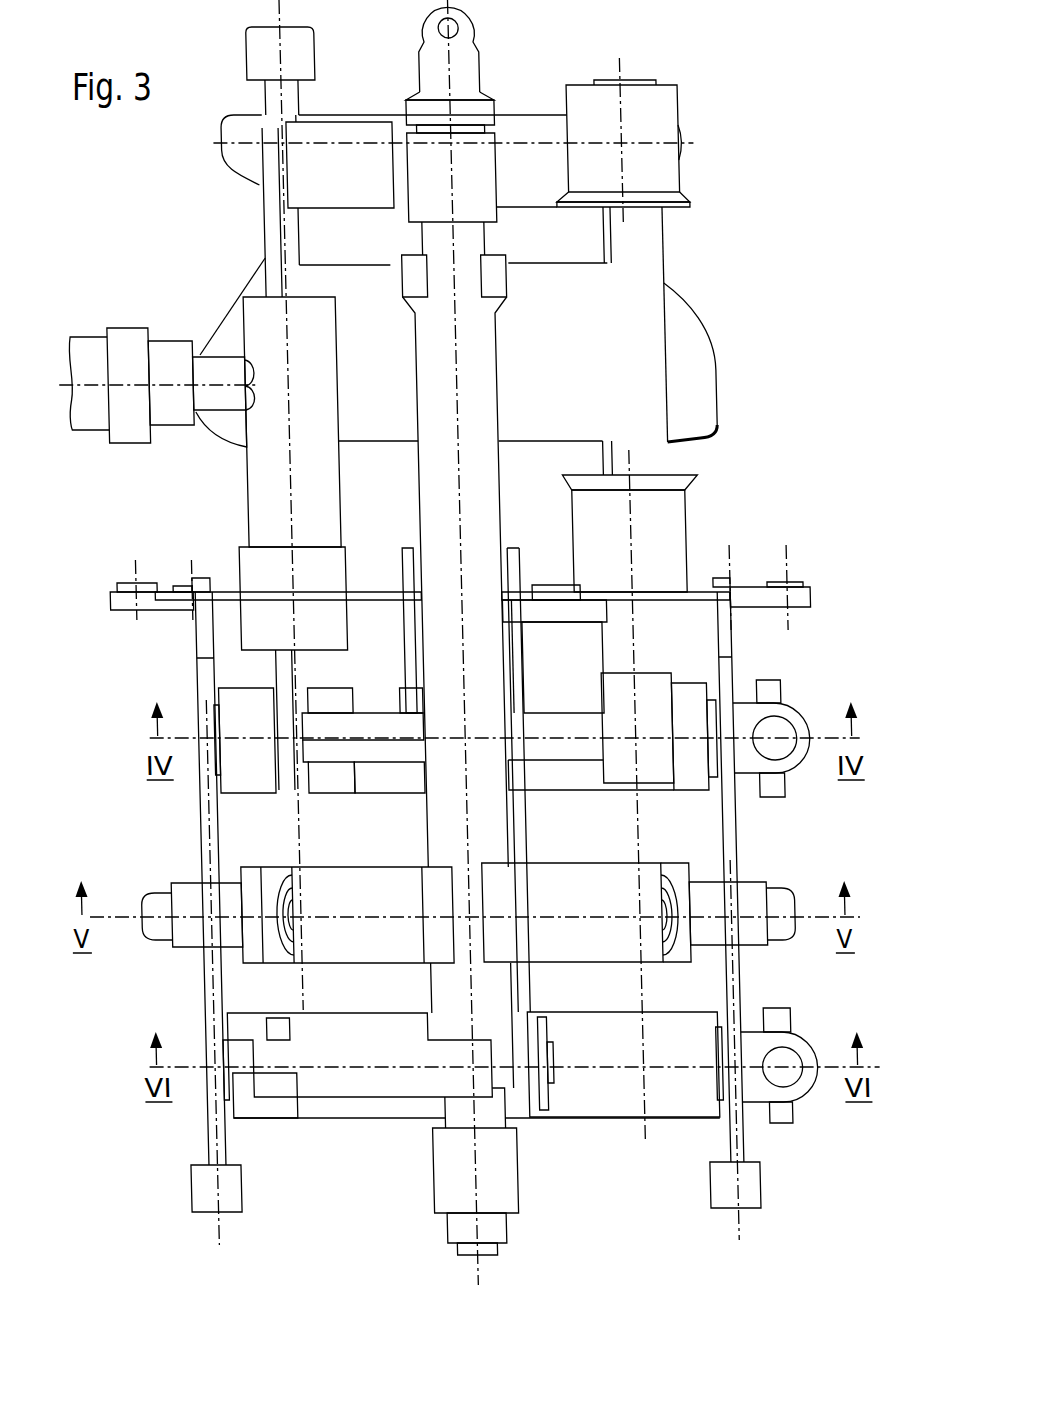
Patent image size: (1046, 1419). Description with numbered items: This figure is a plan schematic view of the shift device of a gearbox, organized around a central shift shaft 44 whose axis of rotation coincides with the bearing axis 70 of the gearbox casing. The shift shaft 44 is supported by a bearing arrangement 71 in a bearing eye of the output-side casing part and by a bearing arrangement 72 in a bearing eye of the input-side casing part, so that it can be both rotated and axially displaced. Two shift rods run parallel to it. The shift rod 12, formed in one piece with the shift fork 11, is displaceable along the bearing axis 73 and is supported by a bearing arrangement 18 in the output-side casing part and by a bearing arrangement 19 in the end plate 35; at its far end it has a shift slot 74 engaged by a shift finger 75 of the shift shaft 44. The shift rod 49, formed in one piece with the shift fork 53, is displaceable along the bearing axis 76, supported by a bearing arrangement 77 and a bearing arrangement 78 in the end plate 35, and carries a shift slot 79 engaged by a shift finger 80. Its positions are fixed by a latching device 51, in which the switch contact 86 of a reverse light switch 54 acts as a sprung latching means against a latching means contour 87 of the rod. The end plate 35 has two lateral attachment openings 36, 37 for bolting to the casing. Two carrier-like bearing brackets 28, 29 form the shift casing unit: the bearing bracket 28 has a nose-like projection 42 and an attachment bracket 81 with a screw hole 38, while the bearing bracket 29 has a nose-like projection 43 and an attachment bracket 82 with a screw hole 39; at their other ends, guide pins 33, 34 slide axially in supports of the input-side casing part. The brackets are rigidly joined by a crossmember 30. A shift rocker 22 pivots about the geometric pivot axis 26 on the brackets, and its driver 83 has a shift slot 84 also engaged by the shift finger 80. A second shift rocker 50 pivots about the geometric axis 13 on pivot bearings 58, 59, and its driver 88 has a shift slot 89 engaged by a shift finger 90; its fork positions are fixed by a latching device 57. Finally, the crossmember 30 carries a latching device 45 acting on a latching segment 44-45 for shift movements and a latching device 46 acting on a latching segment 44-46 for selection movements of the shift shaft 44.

The shift fork 11 is at (551, 352).
The shift rod 12 is at (670, 249).
The geometric axis 13 is at (200, 1070).
The bearing arrangement 18 is at (663, 181).
The bearing arrangement 19 is at (575, 552).
The shift rocker 22 is at (381, 804).
The geometric pivot axis 26 is at (199, 722).
The bearing bracket 28 is at (728, 822).
The bearing bracket 29 is at (166, 995).
The crossmember 30 is at (668, 968).
The guide pin 33 is at (726, 1190).
The guide pin 34 is at (172, 1185).
The end plate 35 is at (686, 572).
The attachment opening 36 is at (720, 577).
The attachment opening 37 is at (176, 572).
The screw hole 38 is at (778, 577).
The screw hole 39 is at (118, 572).
The nose-like projection 42 is at (712, 630).
The nose-like projection 43 is at (188, 641).
The shift shaft 44 is at (493, 496).
The latching segment 44-45 is at (585, 955).
The latching segment 44-46 is at (345, 955).
The latching device 45 is at (785, 891).
The latching device 46 is at (137, 950).
The shift rod 49 is at (248, 206).
The shift rocker 50 is at (560, 1130).
The latching device 51 is at (118, 292).
The shift fork 53 is at (326, 184).
The reverse light switch 54 is at (167, 330).
The latching device 57 is at (788, 1101).
The pivot bearing 58 is at (682, 1097).
The pivot bearing 59 is at (210, 1088).
The bearing axis 70 is at (452, 80).
The bearing arrangement 71 is at (425, 157).
The bearing arrangement 72 is at (436, 1178).
The bearing axis 73 is at (625, 68).
The shift slot 74 is at (588, 714).
The shift finger 75 is at (572, 752).
The bearing axis 76 is at (254, 48).
The bearing arrangement 77 is at (300, 60).
The bearing arrangement 78 is at (243, 577).
The shift slot 79 is at (306, 717).
The shift finger 80 is at (314, 752).
The attachment bracket 81 is at (790, 608).
The attachment bracket 82 is at (104, 606).
The driver 83 is at (313, 694).
The shift slot 84 is at (302, 728).
The switch contact 86 is at (240, 372).
The latching means contour 87 is at (224, 432).
The driver 88 is at (256, 1022).
The shift slot 89 is at (276, 1052).
The shift finger 90 is at (355, 1118).